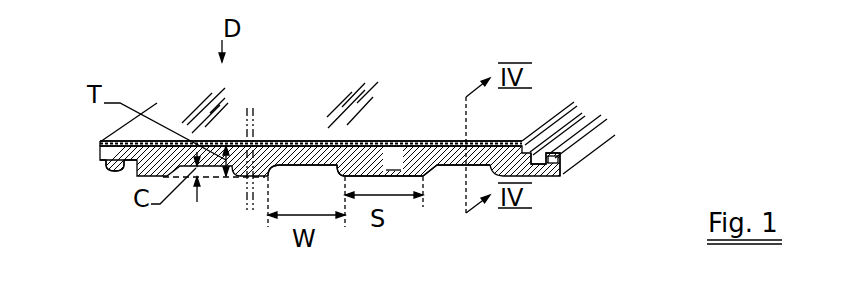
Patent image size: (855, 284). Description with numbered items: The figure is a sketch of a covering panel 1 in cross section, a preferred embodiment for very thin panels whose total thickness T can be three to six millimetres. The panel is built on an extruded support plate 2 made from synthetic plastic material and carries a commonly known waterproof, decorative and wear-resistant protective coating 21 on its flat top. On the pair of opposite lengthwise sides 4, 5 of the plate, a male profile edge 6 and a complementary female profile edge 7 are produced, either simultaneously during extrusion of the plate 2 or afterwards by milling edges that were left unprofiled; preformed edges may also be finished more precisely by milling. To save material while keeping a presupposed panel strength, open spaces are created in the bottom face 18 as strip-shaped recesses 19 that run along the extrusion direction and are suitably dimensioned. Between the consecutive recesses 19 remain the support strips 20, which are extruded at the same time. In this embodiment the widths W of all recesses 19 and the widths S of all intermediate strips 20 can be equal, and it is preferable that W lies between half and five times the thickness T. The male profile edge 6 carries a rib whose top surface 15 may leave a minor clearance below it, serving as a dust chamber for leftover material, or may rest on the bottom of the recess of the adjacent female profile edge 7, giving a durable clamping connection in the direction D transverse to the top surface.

The covering panel 1 is at (335, 135).
The support plate 2 is at (346, 159).
The lengthwise side 4 is at (100, 143).
The lengthwise side 5 is at (566, 172).
The male profile edge 6 is at (108, 158).
The female profile edge 7 is at (560, 158).
The top surface of the rib 15 is at (112, 170).
The bottom face 18 is at (410, 178).
The strip-shaped recess 19 is at (280, 170).
The support strip 20 is at (365, 165).
The protective coating 21 is at (307, 103).